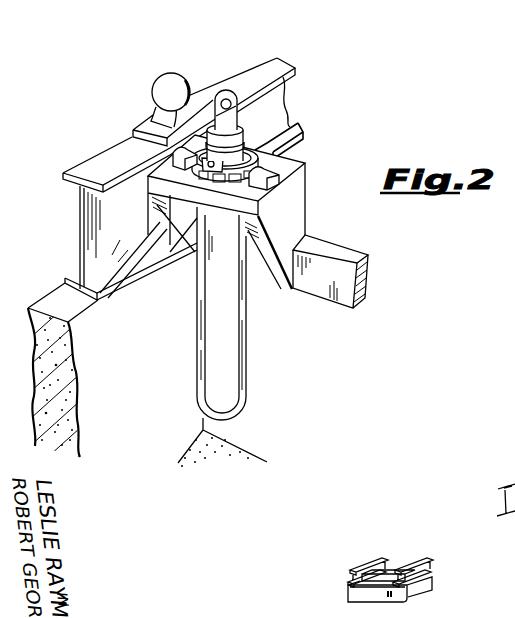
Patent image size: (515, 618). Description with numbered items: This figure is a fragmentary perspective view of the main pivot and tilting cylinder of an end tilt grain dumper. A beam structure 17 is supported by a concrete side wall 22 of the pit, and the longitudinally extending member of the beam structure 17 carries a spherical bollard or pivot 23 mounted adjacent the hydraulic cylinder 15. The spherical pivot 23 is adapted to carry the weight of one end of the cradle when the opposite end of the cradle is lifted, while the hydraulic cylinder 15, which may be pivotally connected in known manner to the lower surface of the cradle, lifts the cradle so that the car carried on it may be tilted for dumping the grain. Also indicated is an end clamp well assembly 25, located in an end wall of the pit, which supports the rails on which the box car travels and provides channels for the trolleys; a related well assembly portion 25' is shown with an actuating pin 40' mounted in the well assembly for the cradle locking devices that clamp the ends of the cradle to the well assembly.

The hydraulic cylinder 15 is at (242, 303).
The beam structure 17 is at (317, 164).
The concrete side wall 22 is at (110, 397).
The spherical bollard or pivot 23 is at (162, 88).
The end clamp well assembly 25 is at (390, 597).
The base plate 25' is at (351, 588).
The actuating pin 40' is at (390, 559).